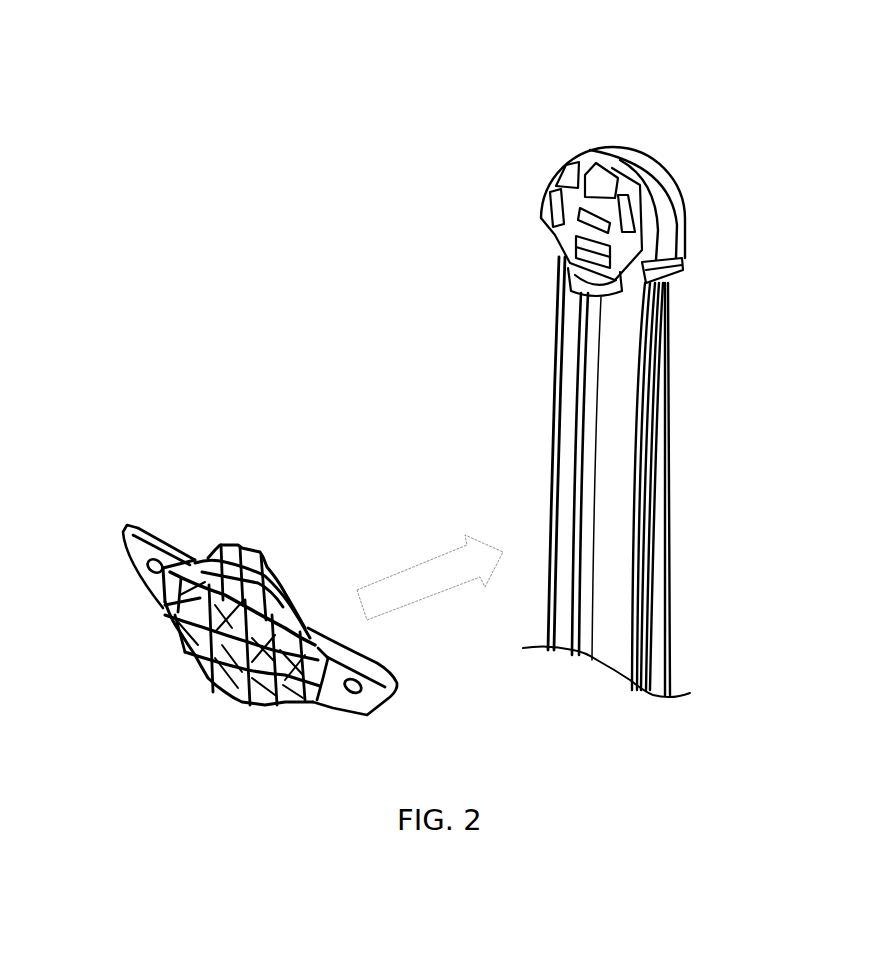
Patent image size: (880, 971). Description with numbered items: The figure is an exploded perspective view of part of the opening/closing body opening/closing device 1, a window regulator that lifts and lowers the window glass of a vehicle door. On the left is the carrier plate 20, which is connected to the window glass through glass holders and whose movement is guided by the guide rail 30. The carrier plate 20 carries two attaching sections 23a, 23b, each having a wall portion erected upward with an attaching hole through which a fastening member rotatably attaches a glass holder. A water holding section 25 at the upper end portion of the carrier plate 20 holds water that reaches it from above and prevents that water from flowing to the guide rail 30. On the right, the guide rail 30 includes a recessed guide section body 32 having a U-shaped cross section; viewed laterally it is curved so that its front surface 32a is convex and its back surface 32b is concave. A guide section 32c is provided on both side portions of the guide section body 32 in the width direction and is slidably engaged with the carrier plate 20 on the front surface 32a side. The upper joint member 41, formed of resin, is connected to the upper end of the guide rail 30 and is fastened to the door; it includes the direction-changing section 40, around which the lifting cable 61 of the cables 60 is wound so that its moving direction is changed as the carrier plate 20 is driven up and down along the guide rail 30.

The opening/closing body opening/closing device 1 is at (637, 58).
The carrier plate 20 is at (214, 515).
The attaching section 23a is at (130, 555).
The attaching section 23b is at (395, 700).
The water holding section 25 is at (285, 579).
The guide rail 30 is at (565, 535).
The guide section body 32 is at (594, 476).
The front surface 32a is at (618, 603).
The back surface 32b is at (652, 472).
The guide section 32c is at (645, 572).
The direction-changing section 40 is at (549, 194).
The upper joint member 41 is at (651, 146).
The cables 60 is at (586, 476).
The lifting cable 61 is at (663, 528).